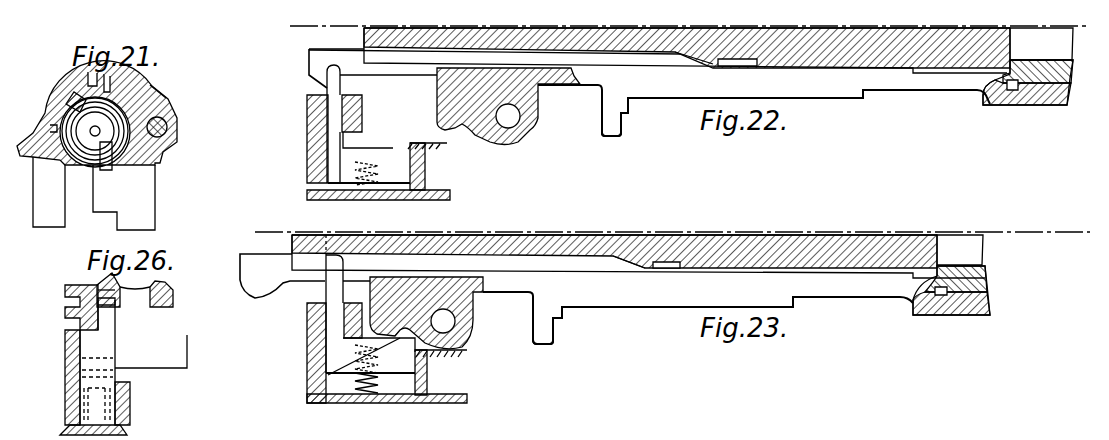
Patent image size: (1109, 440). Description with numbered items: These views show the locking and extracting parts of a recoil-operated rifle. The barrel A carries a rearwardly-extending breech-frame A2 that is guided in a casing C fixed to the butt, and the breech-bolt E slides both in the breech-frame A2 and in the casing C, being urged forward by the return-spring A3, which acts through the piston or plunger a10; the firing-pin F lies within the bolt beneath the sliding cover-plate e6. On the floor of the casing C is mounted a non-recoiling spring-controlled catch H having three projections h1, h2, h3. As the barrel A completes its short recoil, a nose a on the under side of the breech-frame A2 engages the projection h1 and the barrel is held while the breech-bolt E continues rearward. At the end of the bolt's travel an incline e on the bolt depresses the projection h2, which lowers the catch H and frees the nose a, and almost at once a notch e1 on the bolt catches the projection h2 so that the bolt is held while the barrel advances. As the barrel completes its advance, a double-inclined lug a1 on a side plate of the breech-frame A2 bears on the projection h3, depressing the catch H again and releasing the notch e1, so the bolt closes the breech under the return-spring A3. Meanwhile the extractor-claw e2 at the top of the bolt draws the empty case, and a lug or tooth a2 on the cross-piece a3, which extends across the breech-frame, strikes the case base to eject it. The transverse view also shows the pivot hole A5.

In FIG. 22, the barrel A is at (1072, 76).
In FIG. 23, the barrel A is at (983, 292).
In FIG. 21, the breech-frame A2 is at (175, 145).
In FIG. 22, the breech-frame A2 is at (764, 108).
In FIG. 23, the breech-frame A2 is at (698, 315).
In FIG. 21, the return-spring A3 is at (178, 125).
In FIG. 26, the pivot hole A5 is at (162, 351).
In FIG. 22, the pivot hole A5 is at (532, 131).
In FIG. 23, the pivot hole A5 is at (470, 328).
In FIG. 26, the casing C is at (102, 426).
In FIG. 22, the casing C is at (380, 189).
In FIG. 23, the casing C is at (387, 388).
In FIG. 21, the breech-bolt E is at (107, 117).
In FIG. 26, the breech-bolt E is at (135, 290).
In FIG. 22, the breech-bolt E is at (718, 47).
In FIG. 23, the breech-bolt E is at (638, 256).
In FIG. 21, the firing-pin F is at (90, 130).
In FIG. 26, the spring-controlled catch H is at (80, 390).
In FIG. 22, the spring-controlled catch H is at (335, 158).
In FIG. 23, the spring-controlled catch H is at (318, 355).
In FIG. 22, the nose a is at (462, 127).
In FIG. 23, the nose a is at (426, 313).
In FIG. 26, the double-inclined lug a1 is at (70, 288).
In FIG. 22, the double-inclined lug a1 is at (320, 57).
In FIG. 23, the double-inclined lug a1 is at (305, 276).
In FIG. 21, the lug or tooth a2 is at (65, 162).
In FIG. 21, the cross-piece a3 is at (124, 186).
In FIG. 22, the cross-piece a3 is at (613, 125).
In FIG. 23, the cross-piece a3 is at (538, 335).
In FIG. 21, the piston or plunger a10 is at (167, 112).
In FIG. 22, the incline e is at (683, 52).
In FIG. 23, the incline e is at (620, 258).
In FIG. 26, the notch e1 is at (100, 290).
In FIG. 22, the notch e1 is at (741, 60).
In FIG. 23, the notch e1 is at (680, 262).
In FIG. 21, the extractor-claw e2 is at (75, 88).
In FIG. 21, the cover-plate e6 is at (120, 73).
In FIG. 26, the projection h1 is at (100, 383).
In FIG. 22, the projection h1 is at (406, 148).
In FIG. 23, the projection h1 is at (328, 375).
In FIG. 26, the projection h2 is at (110, 303).
In FIG. 22, the projection h2 is at (327, 70).
In FIG. 23, the projection h2 is at (241, 304).
In FIG. 26, the projection h3 is at (83, 337).
In FIG. 22, the projection h3 is at (333, 107).
In FIG. 23, the projection h3 is at (340, 283).